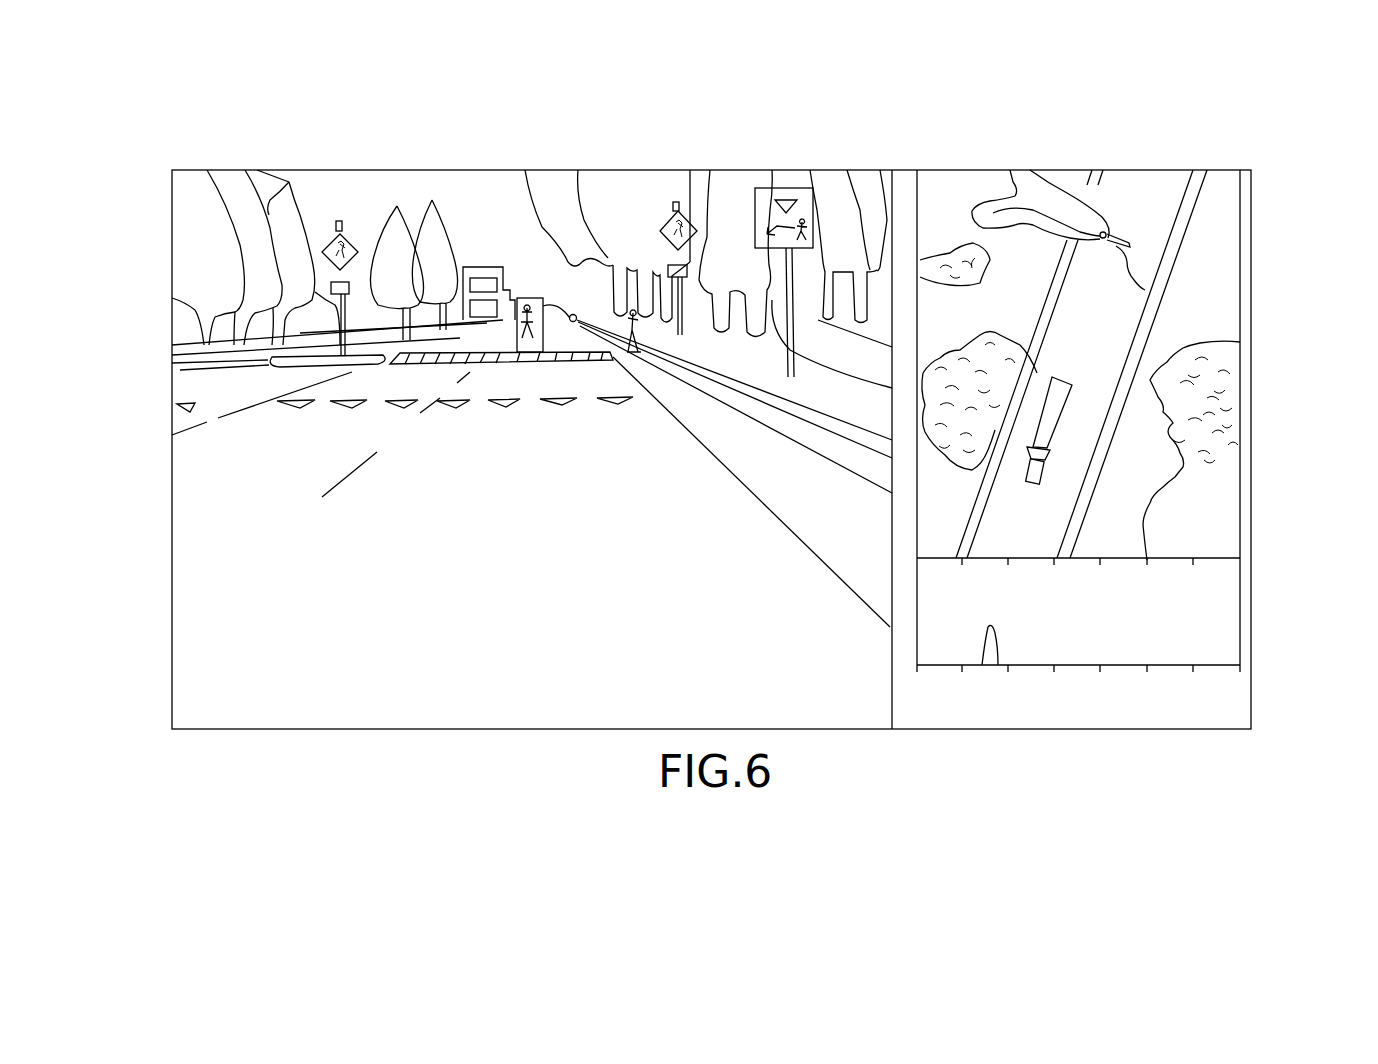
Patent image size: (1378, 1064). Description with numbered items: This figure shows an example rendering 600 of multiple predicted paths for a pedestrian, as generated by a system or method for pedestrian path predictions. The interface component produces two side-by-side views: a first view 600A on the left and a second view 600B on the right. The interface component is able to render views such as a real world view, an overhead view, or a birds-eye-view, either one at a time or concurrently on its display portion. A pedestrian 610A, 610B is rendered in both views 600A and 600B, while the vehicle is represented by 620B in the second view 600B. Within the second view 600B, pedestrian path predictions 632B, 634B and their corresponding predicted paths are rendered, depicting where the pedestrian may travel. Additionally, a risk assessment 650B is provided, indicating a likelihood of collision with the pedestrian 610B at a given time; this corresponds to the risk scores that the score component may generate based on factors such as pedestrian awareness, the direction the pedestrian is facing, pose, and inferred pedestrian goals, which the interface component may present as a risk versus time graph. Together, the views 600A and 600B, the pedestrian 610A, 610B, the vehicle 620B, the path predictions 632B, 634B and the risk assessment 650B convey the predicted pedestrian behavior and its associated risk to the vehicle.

The rendering 600 is at (160, 130).
The first view 600A is at (541, 167).
The second view 600B is at (1078, 168).
The pedestrian 610A is at (529, 357).
The pedestrian 610B is at (1145, 290).
The vehicle 620B is at (1032, 485).
The pedestrian path prediction 632B is at (1055, 264).
The pedestrian path prediction 634B is at (1123, 170).
The risk assessment 650B is at (1186, 612).